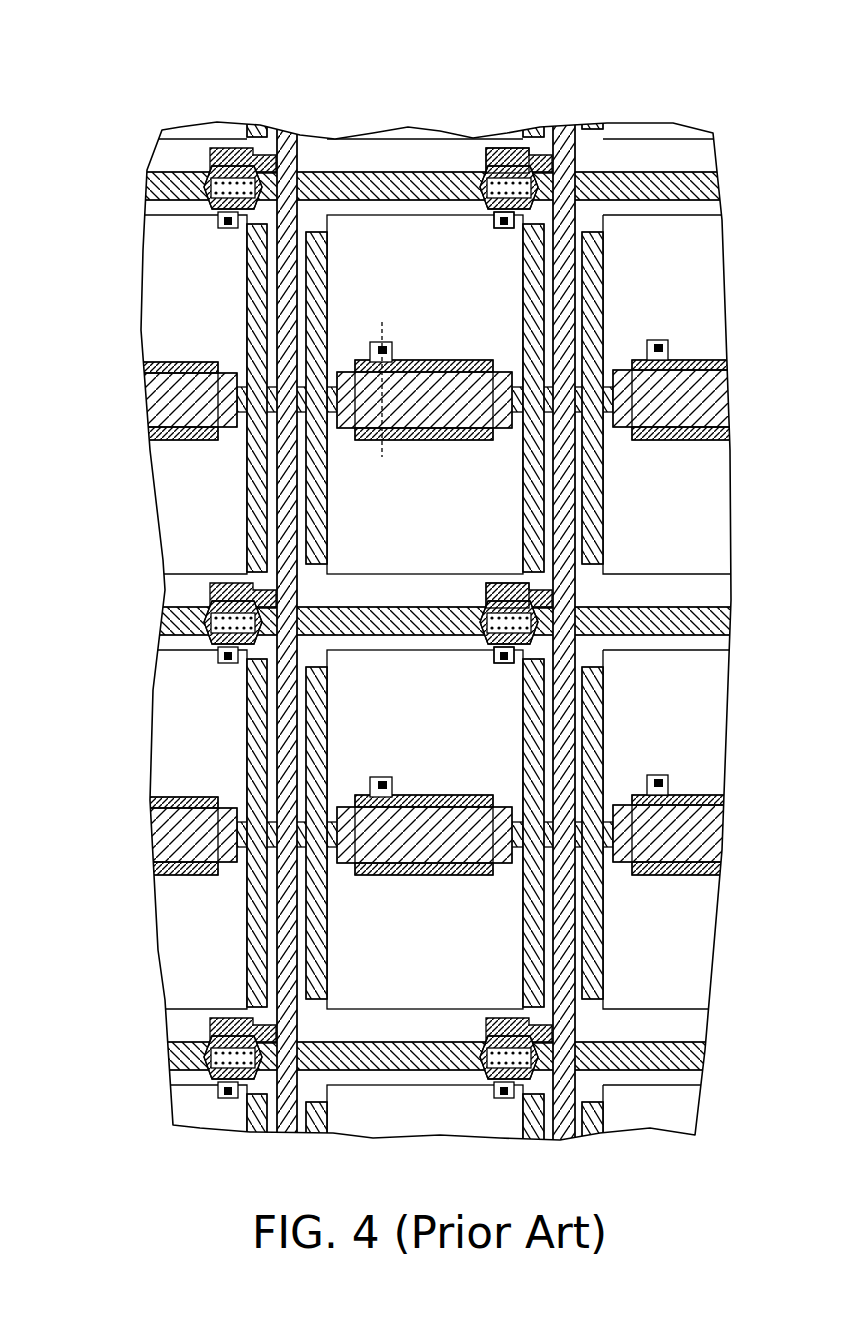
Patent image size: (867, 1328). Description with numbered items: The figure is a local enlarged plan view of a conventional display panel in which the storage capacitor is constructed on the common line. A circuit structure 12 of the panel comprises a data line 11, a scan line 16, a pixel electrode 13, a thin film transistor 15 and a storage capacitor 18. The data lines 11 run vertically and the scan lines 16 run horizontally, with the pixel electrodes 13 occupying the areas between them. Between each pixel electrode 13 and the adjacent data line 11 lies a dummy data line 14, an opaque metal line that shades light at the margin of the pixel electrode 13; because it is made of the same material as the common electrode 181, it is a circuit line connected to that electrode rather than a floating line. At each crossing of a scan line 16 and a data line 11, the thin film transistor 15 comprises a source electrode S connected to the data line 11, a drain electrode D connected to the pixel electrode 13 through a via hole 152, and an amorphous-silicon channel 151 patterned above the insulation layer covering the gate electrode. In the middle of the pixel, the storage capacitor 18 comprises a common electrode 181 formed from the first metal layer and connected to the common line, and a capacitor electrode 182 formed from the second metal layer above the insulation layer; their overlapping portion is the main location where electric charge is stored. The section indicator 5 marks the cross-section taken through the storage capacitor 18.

The data line 11 is at (292, 140).
The circuit structure 12 is at (408, 114).
The pixel electrode 13 is at (405, 231).
The dummy data line 14 is at (536, 287).
The thin film transistor 15 is at (401, 553).
The channel 151 is at (519, 146).
The via hole 152 is at (496, 229).
The scan line 16 is at (201, 168).
The storage capacitor 18 is at (446, 557).
The common electrode 181 is at (505, 430).
The capacitor electrode 182 is at (437, 441).
The source electrode S is at (490, 148).
The drain electrode D is at (512, 229).
The section line 5- 5 is at (374, 325).